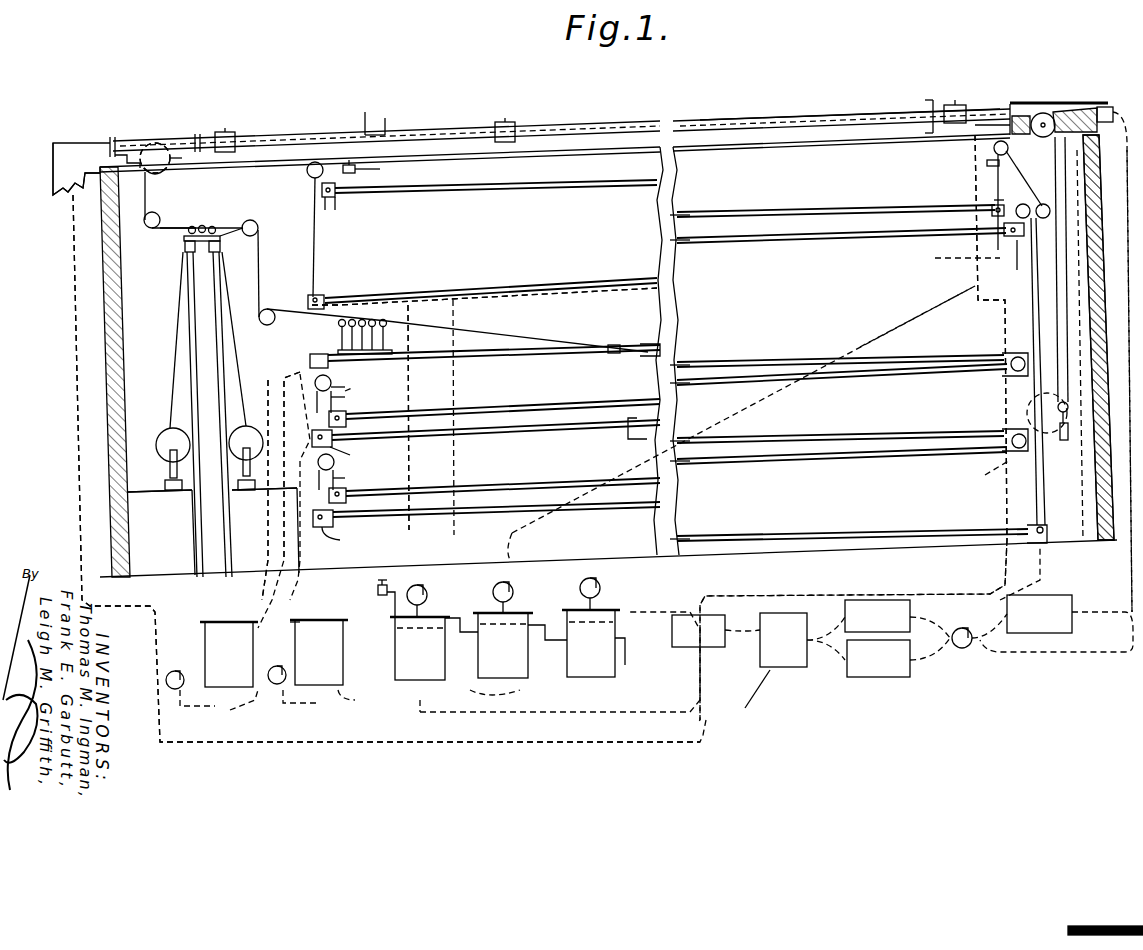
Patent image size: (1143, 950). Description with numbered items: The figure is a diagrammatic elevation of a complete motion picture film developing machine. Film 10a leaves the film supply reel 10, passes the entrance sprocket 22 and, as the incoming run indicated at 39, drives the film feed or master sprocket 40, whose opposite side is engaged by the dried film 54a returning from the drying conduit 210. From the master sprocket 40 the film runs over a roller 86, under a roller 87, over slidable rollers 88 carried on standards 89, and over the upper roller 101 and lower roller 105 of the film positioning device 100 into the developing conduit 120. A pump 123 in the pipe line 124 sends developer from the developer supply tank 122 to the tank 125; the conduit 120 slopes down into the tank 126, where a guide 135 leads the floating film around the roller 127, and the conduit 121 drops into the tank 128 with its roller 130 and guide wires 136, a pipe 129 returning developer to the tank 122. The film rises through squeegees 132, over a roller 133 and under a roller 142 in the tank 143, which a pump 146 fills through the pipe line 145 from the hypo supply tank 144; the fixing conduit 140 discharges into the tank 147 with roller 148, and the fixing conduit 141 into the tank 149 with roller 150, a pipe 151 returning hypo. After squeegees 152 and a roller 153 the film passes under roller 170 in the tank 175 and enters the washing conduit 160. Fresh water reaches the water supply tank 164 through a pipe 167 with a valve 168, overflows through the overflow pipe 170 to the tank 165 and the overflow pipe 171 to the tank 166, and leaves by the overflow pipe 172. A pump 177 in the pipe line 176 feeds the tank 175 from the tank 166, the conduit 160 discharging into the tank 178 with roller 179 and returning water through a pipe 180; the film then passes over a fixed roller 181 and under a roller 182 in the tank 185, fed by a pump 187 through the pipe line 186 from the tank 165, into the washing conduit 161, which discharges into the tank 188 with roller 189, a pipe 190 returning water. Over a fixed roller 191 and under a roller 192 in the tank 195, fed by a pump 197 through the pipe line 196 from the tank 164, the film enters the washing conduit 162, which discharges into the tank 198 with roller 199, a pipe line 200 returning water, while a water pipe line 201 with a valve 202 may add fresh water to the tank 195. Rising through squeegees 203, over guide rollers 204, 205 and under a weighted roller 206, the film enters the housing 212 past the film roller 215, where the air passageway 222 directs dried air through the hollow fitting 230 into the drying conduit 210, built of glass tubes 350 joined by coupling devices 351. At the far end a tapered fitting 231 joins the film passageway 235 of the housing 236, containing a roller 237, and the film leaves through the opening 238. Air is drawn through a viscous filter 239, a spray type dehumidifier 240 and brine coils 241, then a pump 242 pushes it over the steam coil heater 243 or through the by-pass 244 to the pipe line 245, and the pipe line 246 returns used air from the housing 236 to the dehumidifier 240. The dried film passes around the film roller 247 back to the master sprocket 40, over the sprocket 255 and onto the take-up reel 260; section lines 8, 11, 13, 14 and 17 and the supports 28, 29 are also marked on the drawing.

The dashed air path 8 is at (1100, 105).
The film supply reel 10 is at (252, 430).
The film 10a is at (310, 362).
The tray end bracket 11 is at (646, 430).
The section line 13 is at (916, 108).
The section line 14 is at (368, 129).
The dashed path 17 is at (986, 477).
The entrance sprocket 22 is at (222, 242).
The platform 28 is at (258, 490).
The platform 29 is at (158, 492).
The film traveling into the developing machine 39 is at (232, 232).
The film feed or master sprocket 40 is at (204, 226).
The film coming from the conduit 54a is at (178, 236).
The roller 86 is at (258, 228).
The roller 87 is at (272, 307).
The slidable rollers 88 is at (400, 317).
The standards 89 is at (392, 352).
The film positioning device 100 is at (648, 348).
The upper roller 101 is at (612, 344).
The lower roller 105 is at (662, 350).
The film developing conduit 120 is at (775, 361).
The film developing conduit 121 is at (805, 380).
The developer supply tank 122 is at (228, 680).
The pump 123 is at (166, 680).
The pipe line 124 is at (250, 548).
The tank 125 is at (312, 355).
The tank 126 is at (1016, 356).
The roller 127 is at (1005, 374).
The tank 128 is at (345, 414).
The pipe 129 is at (276, 556).
The roller 130 is at (348, 433).
The squeegees 132 is at (345, 397).
The roller 133 is at (345, 387).
The guide 135 is at (1038, 413).
The guide wires 136 is at (317, 408).
The fixing conduit 140 is at (778, 438).
The fixing conduit 141 is at (785, 465).
The roller 142 is at (332, 441).
The tank 143 is at (350, 455).
The hypo supply tank 144 is at (318, 680).
The pipe line 145 is at (275, 753).
The pump 146 is at (285, 666).
The tank 147 is at (1015, 453).
The roller 148 is at (1012, 440).
The tank 149 is at (345, 512).
The roller 150 is at (350, 492).
The pipe 151 is at (356, 702).
The squeegees 152 is at (345, 478).
The roller 153 is at (320, 463).
The washing conduit 160 is at (805, 536).
The washing conduit 161 is at (785, 244).
The washing conduit 162 is at (787, 211).
The water supply tank 164 is at (420, 670).
The water supply tank 165 is at (525, 665).
The water supply tank 166 is at (598, 666).
The pipe 167 is at (395, 592).
The valve 168 is at (382, 596).
The overflow pipe / roller 170 is at (334, 520).
The overflow pipe 171 is at (545, 624).
The overflow pipe 172 is at (627, 650).
The tank 175 is at (342, 535).
The pipe line 176 is at (580, 533).
The pump 177 is at (592, 580).
The tank 178 is at (1047, 535).
The roller 179 is at (1043, 528).
The pipe 180 is at (1040, 562).
The fixed roller 181 is at (1026, 352).
The roller 182 is at (1004, 229).
The tank 185 is at (1017, 245).
The pipe line 186 is at (945, 305).
The pump 187 is at (513, 590).
The tank 188 is at (330, 297).
The roller 189 is at (310, 296).
The pipe 190 is at (484, 495).
The fixed roller 191 is at (307, 171).
The roller 192 is at (322, 188).
The tank 195 is at (335, 200).
The pipe line 196 is at (410, 528).
The pump 197 is at (426, 590).
The tank 198 is at (992, 207).
The roller 199 is at (998, 200).
The pipe line 200 is at (975, 317).
The water pipe line 201 is at (370, 177).
The valve 202 is at (349, 160).
The squeegees 203 is at (987, 163).
The guide roller 204 is at (1008, 150).
The guide roller 205 is at (1034, 184).
The weighted roller 206 is at (1066, 440).
The drying conduit 210 is at (820, 118).
The housing 212 is at (1023, 115).
The film roller 215 is at (1050, 115).
The air passageway 222 is at (1082, 108).
The hollow fitting 230 is at (975, 125).
The tapered fitting 231 is at (205, 133).
The film passageway 235 is at (182, 158).
The housing 236 is at (115, 137).
The roller 237 is at (168, 125).
The opening 238 is at (143, 168).
The viscous filter 239 is at (722, 615).
The spray type dehumidifier 240 is at (785, 667).
The brine coils 241 is at (910, 604).
The pump 242 is at (970, 645).
The steam coil heater 243 is at (1072, 597).
The by-pass 244 is at (1112, 652).
The pipe line 245 is at (1098, 480).
The pipe line 246 is at (78, 357).
The film roller 247 is at (160, 215).
The sprocket 255 is at (186, 250).
The take-up reel 260 is at (165, 440).
The tubes 350 is at (450, 126).
The coupling devices 351 is at (237, 133).